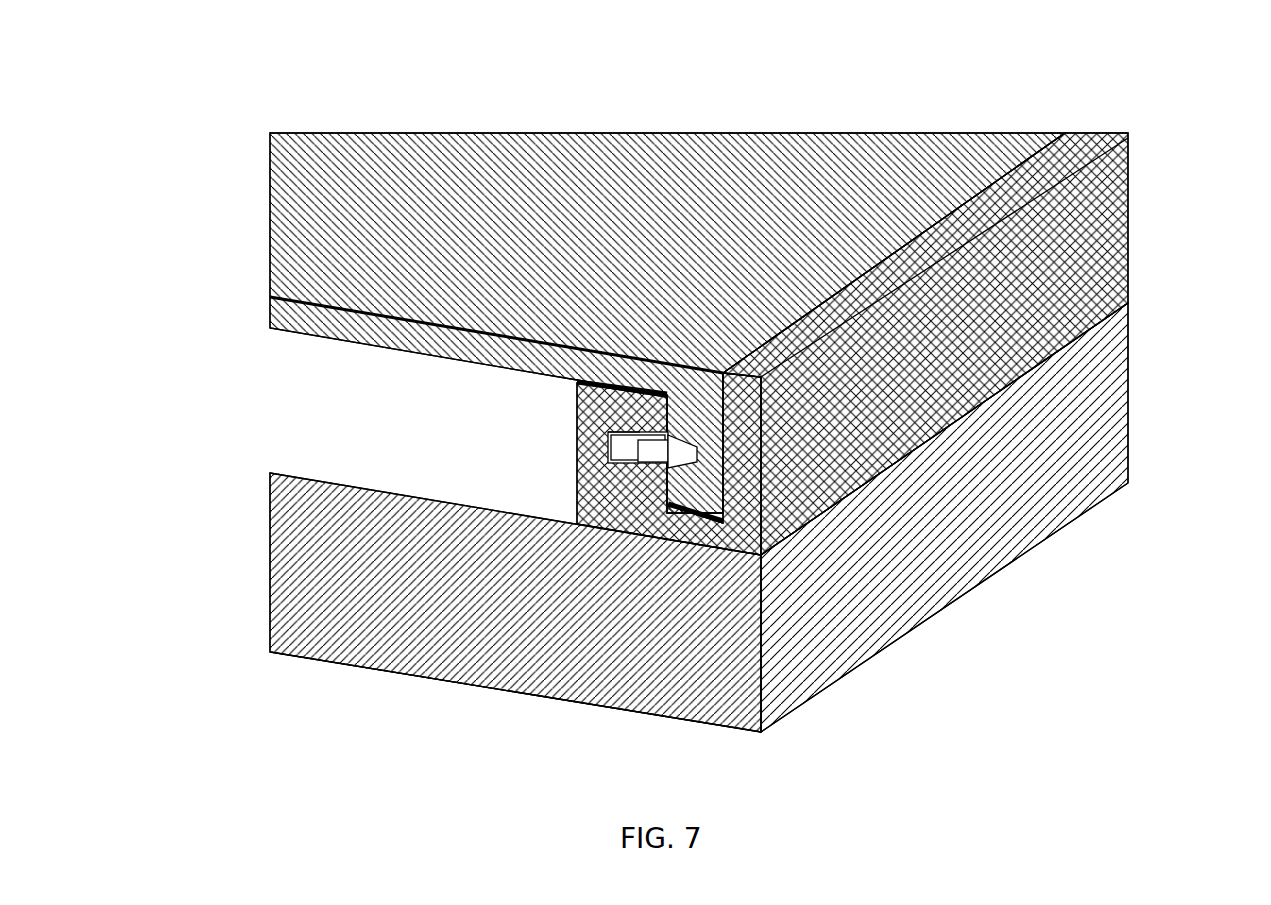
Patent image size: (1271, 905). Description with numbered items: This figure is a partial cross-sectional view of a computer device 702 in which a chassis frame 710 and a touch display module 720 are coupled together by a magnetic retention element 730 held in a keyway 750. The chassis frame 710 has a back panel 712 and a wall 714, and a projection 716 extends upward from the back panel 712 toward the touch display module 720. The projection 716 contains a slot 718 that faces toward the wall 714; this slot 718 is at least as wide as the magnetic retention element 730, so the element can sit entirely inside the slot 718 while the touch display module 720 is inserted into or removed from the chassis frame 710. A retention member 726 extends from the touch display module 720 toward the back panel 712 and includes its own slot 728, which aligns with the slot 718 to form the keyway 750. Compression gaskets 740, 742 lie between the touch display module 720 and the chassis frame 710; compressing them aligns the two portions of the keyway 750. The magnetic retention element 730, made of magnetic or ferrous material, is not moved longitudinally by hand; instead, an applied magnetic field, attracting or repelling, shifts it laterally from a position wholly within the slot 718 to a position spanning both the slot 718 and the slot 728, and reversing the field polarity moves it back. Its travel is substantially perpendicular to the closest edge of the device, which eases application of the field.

The optical device 702 is at (693, 390).
The chassis frame 710 is at (460, 682).
The back panel 712 is at (268, 542).
The wall 714 is at (1128, 250).
The projection 716 is at (577, 498).
The slot 718 is at (608, 445).
The touch display module 720 is at (518, 135).
The retention member 726 is at (697, 418).
The slot 728 is at (680, 437).
The magnetic retention element 730 is at (617, 430).
The compression gasket 740 is at (577, 387).
The compression gasket 742 is at (713, 515).
The keyway 750 is at (672, 438).